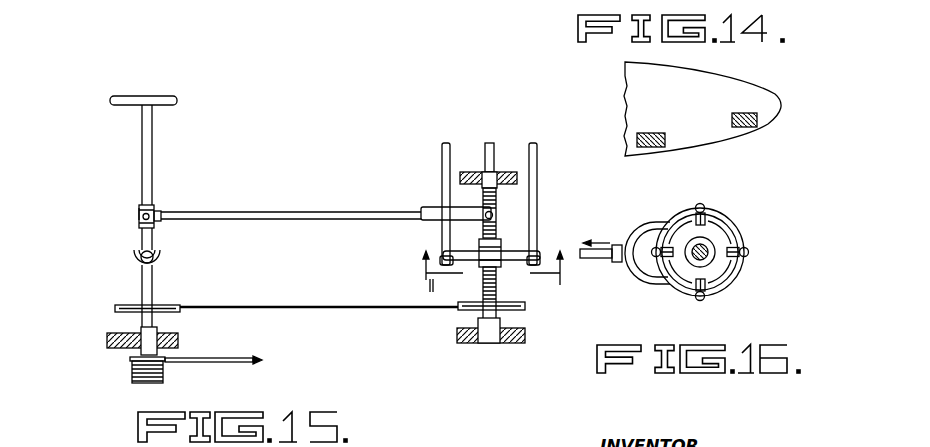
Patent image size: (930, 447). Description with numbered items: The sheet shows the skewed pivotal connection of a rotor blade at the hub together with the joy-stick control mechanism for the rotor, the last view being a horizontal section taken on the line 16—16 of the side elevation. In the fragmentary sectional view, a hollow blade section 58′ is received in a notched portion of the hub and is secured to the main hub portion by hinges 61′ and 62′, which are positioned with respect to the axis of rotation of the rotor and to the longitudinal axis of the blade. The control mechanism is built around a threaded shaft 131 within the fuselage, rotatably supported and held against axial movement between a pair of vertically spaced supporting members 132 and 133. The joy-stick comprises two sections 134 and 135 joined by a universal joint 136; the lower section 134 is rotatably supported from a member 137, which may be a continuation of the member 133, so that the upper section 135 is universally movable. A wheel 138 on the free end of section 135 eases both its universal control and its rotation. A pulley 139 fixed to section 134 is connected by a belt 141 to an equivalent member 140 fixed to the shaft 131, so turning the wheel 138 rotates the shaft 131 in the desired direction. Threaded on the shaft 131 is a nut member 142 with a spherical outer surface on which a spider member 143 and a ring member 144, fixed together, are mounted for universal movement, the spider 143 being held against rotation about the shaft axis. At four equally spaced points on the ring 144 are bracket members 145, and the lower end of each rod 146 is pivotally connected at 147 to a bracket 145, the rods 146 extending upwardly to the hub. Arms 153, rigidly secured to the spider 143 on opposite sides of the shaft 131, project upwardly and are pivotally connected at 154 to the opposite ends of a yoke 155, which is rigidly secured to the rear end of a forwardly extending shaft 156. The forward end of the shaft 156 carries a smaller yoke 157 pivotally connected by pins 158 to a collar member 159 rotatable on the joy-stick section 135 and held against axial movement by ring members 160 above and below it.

In FIG. 15, the threaded shaft 131 is at (497, 290).
In FIG. 16, the threaded shaft 131 is at (706, 258).
In FIG. 15, the supporting member 132 is at (501, 168).
In FIG. 15, the supporting member 133 is at (501, 343).
In FIG. 15, the joy-stick section 134 is at (153, 290).
In FIG. 15, the joy-stick section 135 is at (152, 148).
In FIG. 15, the universal joint 136 is at (134, 252).
In FIG. 15, the supporting member 137 is at (180, 340).
In FIG. 15, the wheel 138 is at (178, 101).
In FIG. 15, the pulley 139 is at (124, 305).
In FIG. 15, the pulley member 140 is at (526, 307).
In FIG. 15, the belt 141 is at (326, 308).
In FIG. 15, the nut member 142 is at (503, 246).
In FIG. 16, the spider member 143 is at (714, 228).
In FIG. 15, the ring member 144 is at (461, 262).
In FIG. 16, the ring member 144 is at (740, 238).
In FIG. 15, the bracket members 145 is at (481, 250).
In FIG. 15, the rods 146 is at (442, 152).
In FIG. 15, the pivotal connection 147 is at (547, 238).
In FIG. 15, the arms 153 is at (520, 192).
In FIG. 15, the pivotal connection 154 is at (487, 211).
In FIG. 15, the yoke 155 is at (430, 208).
In FIG. 16, the yoke 155 is at (634, 281).
In FIG. 15, the shaft 156 is at (282, 212).
In FIG. 16, the shaft 156 is at (588, 260).
In FIG. 15, the yoke 157 is at (160, 212).
In FIG. 15, the pins 158 is at (139, 212).
In FIG. 15, the collar member 159 is at (139, 220).
In FIG. 15, the ring members 160 is at (156, 206).
In FIG. 15, the section line 16 is at (489, 258).
In FIG. 14, the hollow members 58′ is at (726, 74).
In FIG. 14, the hinge 61′ is at (750, 127).
In FIG. 14, the hinge 62′ is at (652, 147).